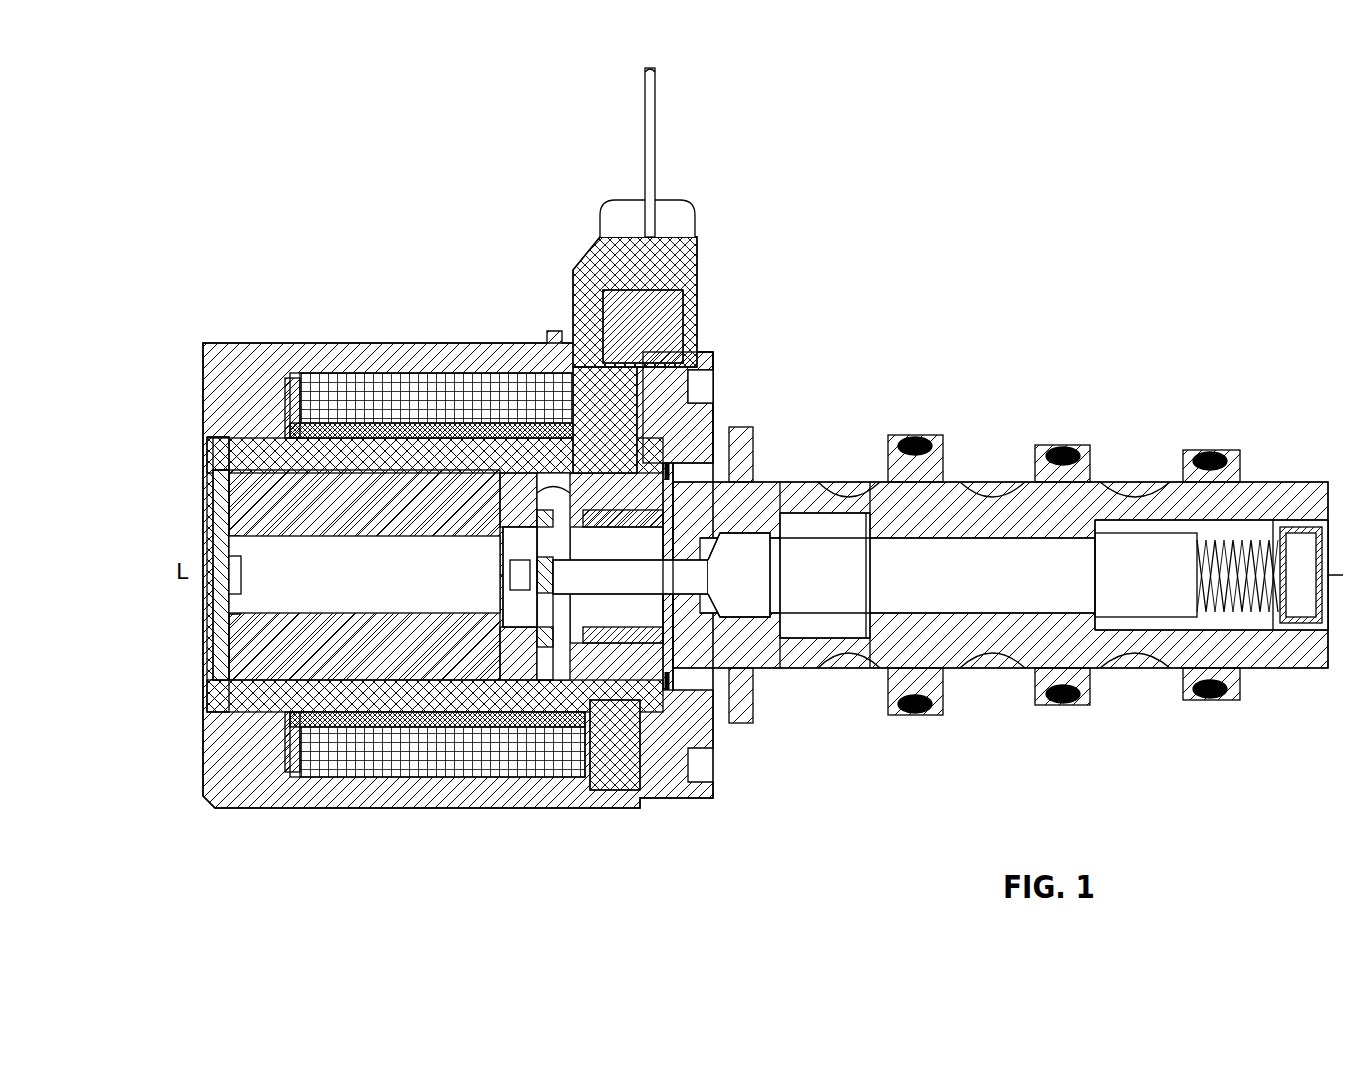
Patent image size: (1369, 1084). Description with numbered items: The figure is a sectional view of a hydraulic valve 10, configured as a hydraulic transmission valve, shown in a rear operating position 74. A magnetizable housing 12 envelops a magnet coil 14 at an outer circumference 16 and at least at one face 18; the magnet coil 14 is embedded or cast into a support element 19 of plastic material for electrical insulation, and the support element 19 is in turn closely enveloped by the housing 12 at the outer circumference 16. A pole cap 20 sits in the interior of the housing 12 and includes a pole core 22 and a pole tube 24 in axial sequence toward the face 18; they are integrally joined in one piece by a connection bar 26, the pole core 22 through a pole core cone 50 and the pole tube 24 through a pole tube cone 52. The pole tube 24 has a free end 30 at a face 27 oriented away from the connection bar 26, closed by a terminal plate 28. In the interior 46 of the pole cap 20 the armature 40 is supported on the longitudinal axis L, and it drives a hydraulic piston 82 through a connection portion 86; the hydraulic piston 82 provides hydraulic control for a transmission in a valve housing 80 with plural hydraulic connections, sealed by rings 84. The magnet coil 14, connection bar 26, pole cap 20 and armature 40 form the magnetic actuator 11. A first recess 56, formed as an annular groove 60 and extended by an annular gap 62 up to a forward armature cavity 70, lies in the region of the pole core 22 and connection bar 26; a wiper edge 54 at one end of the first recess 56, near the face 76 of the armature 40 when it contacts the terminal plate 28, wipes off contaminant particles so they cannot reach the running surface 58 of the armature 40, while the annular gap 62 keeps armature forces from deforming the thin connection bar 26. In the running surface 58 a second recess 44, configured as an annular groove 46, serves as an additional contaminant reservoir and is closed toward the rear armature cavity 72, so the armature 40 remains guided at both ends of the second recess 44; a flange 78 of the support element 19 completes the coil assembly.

The hydraulic valve 10 is at (848, 218).
The magnetic actuator 11 is at (611, 254).
The housing 12 is at (222, 812).
The magnet coil 14 is at (437, 562).
The outer circumference 16 is at (437, 562).
The face 18 is at (214, 629).
The support element 19 is at (625, 748).
The pole cap 20 is at (437, 562).
The pole core 22 is at (598, 742).
The pole tube 24 is at (437, 562).
The connection bar 26 is at (482, 690).
The face 27 is at (153, 580).
The terminal plate 28 is at (212, 478).
The free end 30 is at (215, 696).
The armature 40 is at (250, 513).
The second recess 44 is at (437, 562).
The annular groove 46 is at (342, 440).
The pole core cone 50 is at (539, 679).
The pole tube cone 52 is at (539, 679).
The wiper edge 54 is at (503, 470).
The first recess 56 is at (607, 249).
The running surface 58 is at (308, 470).
The annular groove 60 is at (522, 430).
The annular gap 62 is at (592, 440).
The forward armature cavity 70 is at (556, 657).
The rear armature cavity 72 is at (215, 440).
The rear operating position 74 is at (183, 362).
The face 76 is at (560, 480).
The bobbin flange 78 is at (290, 760).
The valve housing 80 is at (1258, 482).
The hydraulic piston 82 is at (940, 584).
The sealing ring 84 is at (850, 482).
The connection portion 86 is at (556, 563).